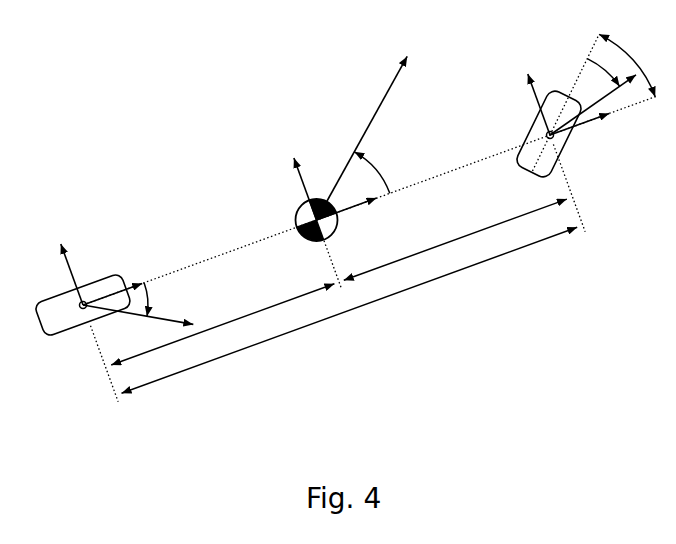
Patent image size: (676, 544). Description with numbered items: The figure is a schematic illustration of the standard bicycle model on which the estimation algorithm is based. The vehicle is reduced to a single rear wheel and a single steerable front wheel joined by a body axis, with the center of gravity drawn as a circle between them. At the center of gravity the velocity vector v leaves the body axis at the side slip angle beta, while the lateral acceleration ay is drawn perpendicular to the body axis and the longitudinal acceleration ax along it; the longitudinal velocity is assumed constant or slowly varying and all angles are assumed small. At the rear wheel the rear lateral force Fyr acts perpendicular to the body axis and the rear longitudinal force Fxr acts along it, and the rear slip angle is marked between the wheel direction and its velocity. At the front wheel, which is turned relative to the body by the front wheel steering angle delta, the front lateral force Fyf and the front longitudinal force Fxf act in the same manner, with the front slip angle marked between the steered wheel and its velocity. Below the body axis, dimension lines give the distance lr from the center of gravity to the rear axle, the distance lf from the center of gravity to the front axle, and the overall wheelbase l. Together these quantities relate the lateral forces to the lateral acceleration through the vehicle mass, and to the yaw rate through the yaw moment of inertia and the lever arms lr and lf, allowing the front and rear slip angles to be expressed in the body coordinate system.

The rear lateral force Fyr is at (57, 270).
The rear longitudinal force Fxr is at (112, 279).
The vehicle velocity vector v is at (362, 138).
The lateral acceleration ay is at (289, 186).
The longitudinal acceleration ax is at (355, 210).
The side slip angle beta is at (374, 173).
The front lateral force Fyf is at (523, 100).
The front longitudinal force Fxf is at (591, 124).
The front wheel steering angle delta is at (627, 65).
The distance from center of gravity to rear axle lr is at (222, 324).
The distance from center of gravity to front axle lf is at (455, 239).
The wheelbase l is at (350, 310).